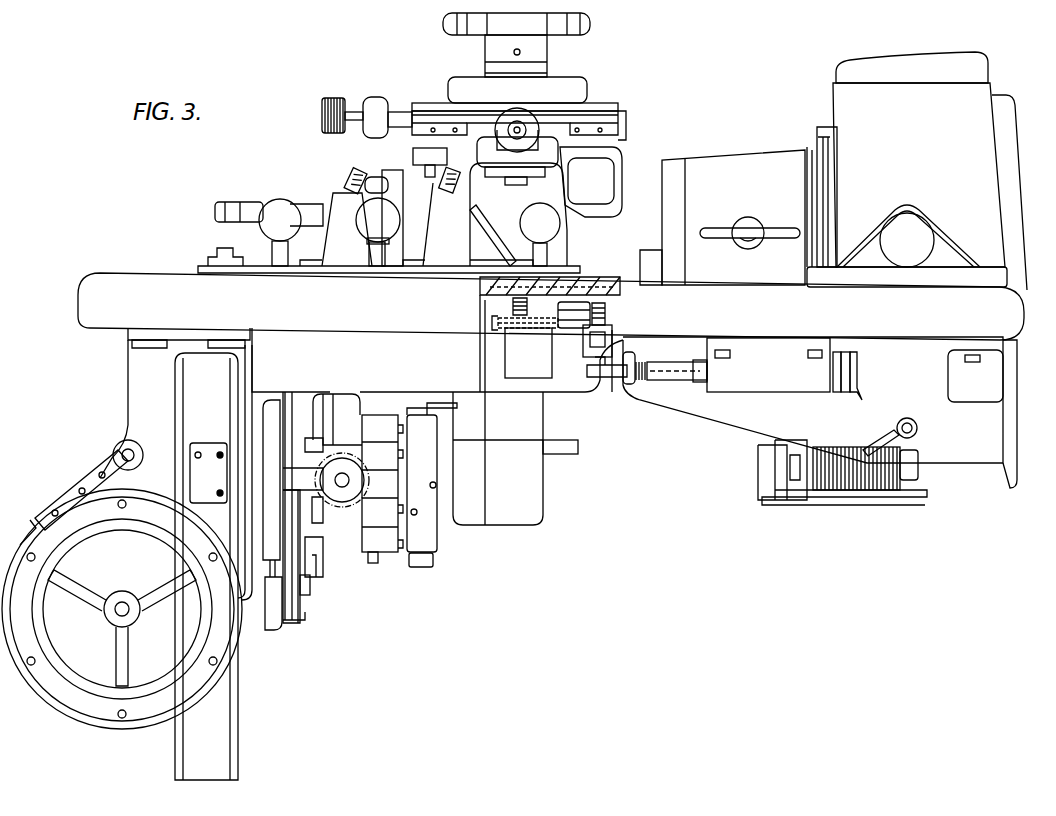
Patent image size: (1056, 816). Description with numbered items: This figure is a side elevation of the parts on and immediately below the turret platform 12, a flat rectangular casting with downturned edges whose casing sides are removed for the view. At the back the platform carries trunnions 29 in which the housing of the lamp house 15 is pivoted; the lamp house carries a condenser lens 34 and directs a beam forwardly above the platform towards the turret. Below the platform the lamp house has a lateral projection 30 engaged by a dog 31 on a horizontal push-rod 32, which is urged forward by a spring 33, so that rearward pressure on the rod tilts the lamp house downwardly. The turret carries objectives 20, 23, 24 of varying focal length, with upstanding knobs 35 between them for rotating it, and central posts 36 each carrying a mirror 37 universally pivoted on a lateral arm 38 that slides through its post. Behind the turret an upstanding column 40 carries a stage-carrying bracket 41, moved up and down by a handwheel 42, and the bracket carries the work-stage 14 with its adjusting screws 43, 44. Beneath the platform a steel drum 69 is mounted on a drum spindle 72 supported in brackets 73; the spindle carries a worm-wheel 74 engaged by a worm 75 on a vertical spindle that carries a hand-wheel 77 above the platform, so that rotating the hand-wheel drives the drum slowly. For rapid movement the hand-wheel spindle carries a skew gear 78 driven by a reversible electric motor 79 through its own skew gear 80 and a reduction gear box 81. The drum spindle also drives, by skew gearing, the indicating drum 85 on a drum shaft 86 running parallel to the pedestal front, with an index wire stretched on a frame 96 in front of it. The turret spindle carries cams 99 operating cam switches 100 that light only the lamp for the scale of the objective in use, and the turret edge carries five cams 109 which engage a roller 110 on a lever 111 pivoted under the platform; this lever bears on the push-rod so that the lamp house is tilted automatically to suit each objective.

The turret platform 12 is at (145, 272).
The work-stage 14 is at (622, 135).
The lamp house 15 is at (833, 107).
The objective 20 is at (575, 272).
The objective 23 is at (330, 196).
The objective 24 is at (470, 192).
The trunnions 29 is at (898, 215).
The lateral projection 30 is at (855, 393).
The dog 31 is at (836, 393).
The push-rod 32 is at (830, 365).
The spring 33 is at (640, 382).
The condenser lens 34 is at (700, 158).
The upstanding knobs 35 is at (262, 228).
The posts 36 is at (413, 172).
The mirror 37 is at (345, 176).
The lateral arm 38 is at (358, 176).
The column 40 is at (505, 248).
The stage-carrying bracket 41 is at (591, 182).
The handwheel 42 is at (590, 22).
The adjusting screw 43 is at (512, 122).
The adjusting screw 44 is at (332, 110).
The steel drum 69 is at (190, 745).
The drum spindle 72 is at (325, 565).
The brackets 73 is at (128, 392).
The worm-wheel 74 is at (306, 612).
The worm 75 is at (310, 586).
The hand-wheel 77 is at (213, 213).
The skew gear 78 is at (290, 478).
The electric motor 79 is at (505, 524).
The skew gear 80 is at (355, 476).
The reduction gear box 81 is at (350, 428).
The indicating drum 85 is at (20, 545).
The drum shaft 86 is at (123, 605).
The frame 96 is at (62, 500).
The cams 99 is at (418, 512).
The cam switches 100 is at (336, 420).
The cams 109 is at (525, 338).
The roller 110 is at (575, 330).
The lever 111 is at (600, 380).